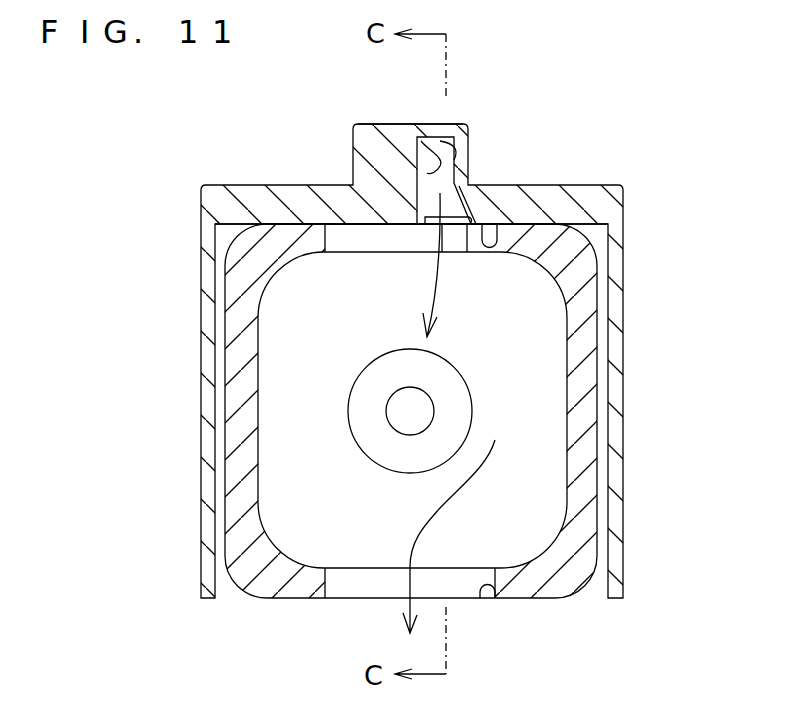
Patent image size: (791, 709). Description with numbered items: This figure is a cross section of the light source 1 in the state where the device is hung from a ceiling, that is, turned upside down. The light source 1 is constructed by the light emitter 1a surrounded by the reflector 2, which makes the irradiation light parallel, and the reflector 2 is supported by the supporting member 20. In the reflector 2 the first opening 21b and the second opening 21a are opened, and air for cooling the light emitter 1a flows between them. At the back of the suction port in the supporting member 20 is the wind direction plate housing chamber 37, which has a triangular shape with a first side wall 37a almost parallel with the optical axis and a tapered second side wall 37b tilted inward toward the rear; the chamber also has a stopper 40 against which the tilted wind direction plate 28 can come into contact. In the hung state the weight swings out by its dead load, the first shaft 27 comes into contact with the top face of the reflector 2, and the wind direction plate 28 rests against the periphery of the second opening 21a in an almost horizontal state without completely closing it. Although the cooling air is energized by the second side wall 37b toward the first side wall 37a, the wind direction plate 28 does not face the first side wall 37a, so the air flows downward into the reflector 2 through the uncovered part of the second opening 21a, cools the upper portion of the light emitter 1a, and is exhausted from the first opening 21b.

The light source 1 is at (694, 387).
The light emitter 1a is at (460, 405).
The reflector 2 is at (590, 495).
The supporting member 20 is at (625, 558).
The second opening 21a is at (486, 238).
The first opening 21b is at (481, 590).
The first shaft 27 is at (467, 226).
The wind direction plate 28 is at (431, 224).
The wind direction plate housing chamber 37 is at (443, 125).
The first side wall 37a is at (435, 148).
The second side wall 37b is at (399, 123).
The stopper 40 is at (462, 190).